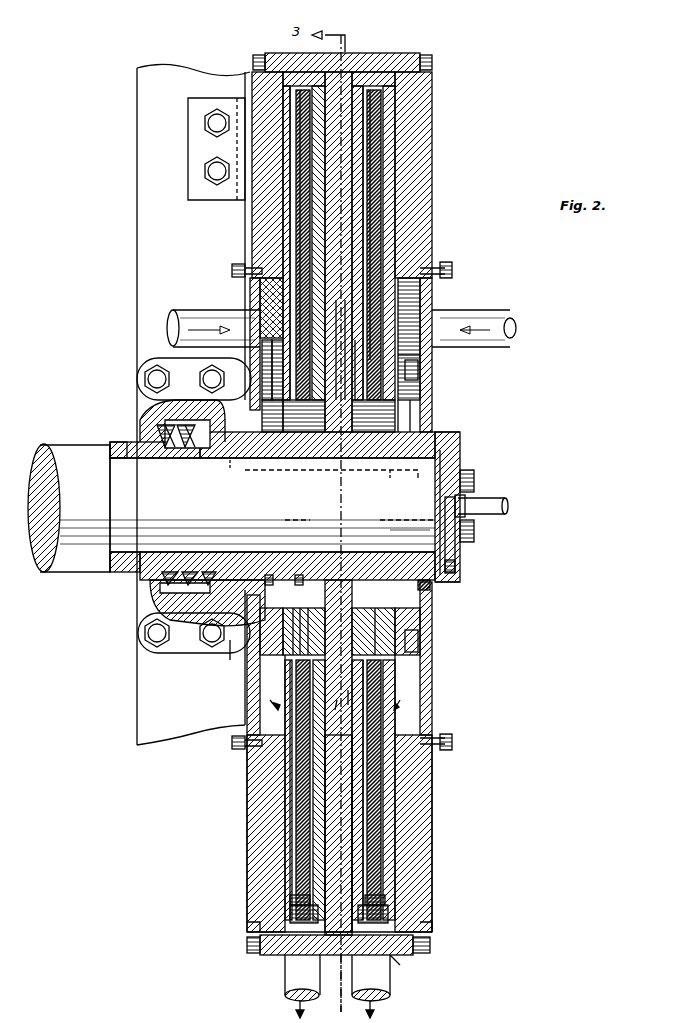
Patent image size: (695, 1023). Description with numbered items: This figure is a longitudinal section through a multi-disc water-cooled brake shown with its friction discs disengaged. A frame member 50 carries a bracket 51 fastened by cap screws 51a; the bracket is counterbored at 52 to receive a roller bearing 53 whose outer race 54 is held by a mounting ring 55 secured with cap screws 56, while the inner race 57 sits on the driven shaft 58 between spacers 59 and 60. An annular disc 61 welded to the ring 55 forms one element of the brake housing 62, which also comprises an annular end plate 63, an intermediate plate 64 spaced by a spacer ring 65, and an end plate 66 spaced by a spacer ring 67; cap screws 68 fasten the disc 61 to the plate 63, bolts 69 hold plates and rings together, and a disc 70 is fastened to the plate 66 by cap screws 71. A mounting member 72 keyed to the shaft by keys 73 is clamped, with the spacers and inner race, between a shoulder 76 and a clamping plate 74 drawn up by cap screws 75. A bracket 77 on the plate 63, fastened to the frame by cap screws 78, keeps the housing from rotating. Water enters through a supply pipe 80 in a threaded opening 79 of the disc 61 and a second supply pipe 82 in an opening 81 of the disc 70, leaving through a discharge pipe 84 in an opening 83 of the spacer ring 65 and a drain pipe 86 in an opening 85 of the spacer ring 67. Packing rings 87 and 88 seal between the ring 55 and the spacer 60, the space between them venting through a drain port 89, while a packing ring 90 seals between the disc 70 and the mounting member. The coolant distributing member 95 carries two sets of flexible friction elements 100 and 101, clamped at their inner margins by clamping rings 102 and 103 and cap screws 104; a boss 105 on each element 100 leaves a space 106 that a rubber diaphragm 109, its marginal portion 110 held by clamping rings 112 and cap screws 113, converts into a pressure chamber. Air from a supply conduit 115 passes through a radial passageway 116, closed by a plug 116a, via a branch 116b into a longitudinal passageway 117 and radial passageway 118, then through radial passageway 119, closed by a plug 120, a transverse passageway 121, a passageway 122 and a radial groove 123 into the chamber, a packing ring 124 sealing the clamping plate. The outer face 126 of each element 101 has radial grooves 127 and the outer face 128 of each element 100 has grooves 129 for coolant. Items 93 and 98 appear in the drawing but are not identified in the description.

The frame member 50 is at (137, 272).
The bracket 51 is at (155, 650).
The cap screws 51a is at (200, 670).
The counterbore 52 is at (145, 420).
The roller bearing 53 is at (165, 580).
The outer race 54 is at (160, 598).
The mounting ring 55 is at (228, 652).
The cap screws 56 is at (270, 400).
The inner race 57 is at (188, 450).
The driven shaft 58 is at (40, 500).
The spacer 59 is at (120, 460).
The spacer 60 is at (238, 552).
The annular disc 61 is at (247, 734).
The brake housing 62 is at (240, 810).
The annular end plate 63 is at (247, 862).
The annular intermediate plate 64 is at (341, 975).
The spacer ring 65 is at (282, 955).
The annular end plate 66 is at (432, 830).
The spacer ring 67 is at (406, 966).
The cap screws 68 is at (232, 270).
The bolts 69 is at (432, 64).
The disc 70 is at (432, 676).
The cap screws 71 is at (445, 264).
The mounting member 72 is at (460, 438).
The keys 73 is at (462, 452).
The clamping plate 74 is at (450, 432).
The cap screws 75 is at (474, 480).
The shoulder 76 is at (112, 500).
The bracket 77 is at (230, 200).
The cap screws 78 is at (205, 170).
The threaded opening 79 is at (262, 305).
The water supply pipe 80 is at (188, 312).
The opening 81 is at (440, 318).
The second water supply pipe 82 is at (505, 318).
The threaded opening 83 is at (260, 930).
The discharge pipe 84 is at (290, 1002).
The opening 85 is at (420, 930).
The drain pipe 86 is at (390, 996).
The packing ring 87 is at (298, 578).
The packing ring 88 is at (266, 578).
The drain port 89 is at (238, 460).
The packing ring 90 is at (420, 420).
The passage block 93 is at (304, 416).
The coolant distributing member 95 is at (373, 416).
The passage 98 is at (353, 353).
The flexible friction element 100 is at (344, 323).
The friction element 101 is at (405, 700).
The clamping ring 102 is at (425, 358).
The clamping ring 103 is at (337, 631).
The cap screws 104 is at (290, 334).
The boss 105 is at (274, 358).
The space 106 is at (290, 700).
The diaphragm 109 is at (375, 178).
The marginal portion 110 is at (300, 90).
The clamping rings 112 is at (290, 900).
The cap screws 113 is at (252, 92).
The air supply conduit 115 is at (505, 504).
The radial passageway 116 is at (455, 548).
The plug 116a is at (460, 582).
The branch 116b is at (456, 565).
The longitudinally extending passageway 117 is at (390, 552).
The radial passageway 118 is at (330, 552).
The radial passageway 119 is at (330, 625).
The plug 120 is at (344, 683).
The transverse passageway 121 is at (344, 688).
The passageway 122 is at (295, 622).
The radial groove 123 is at (294, 668).
The packing ring 124 is at (430, 588).
The outer face 126 is at (410, 118).
The radial grooves 127 is at (400, 150).
The outer face 128 is at (345, 72).
The radial grooves 129 is at (355, 790).